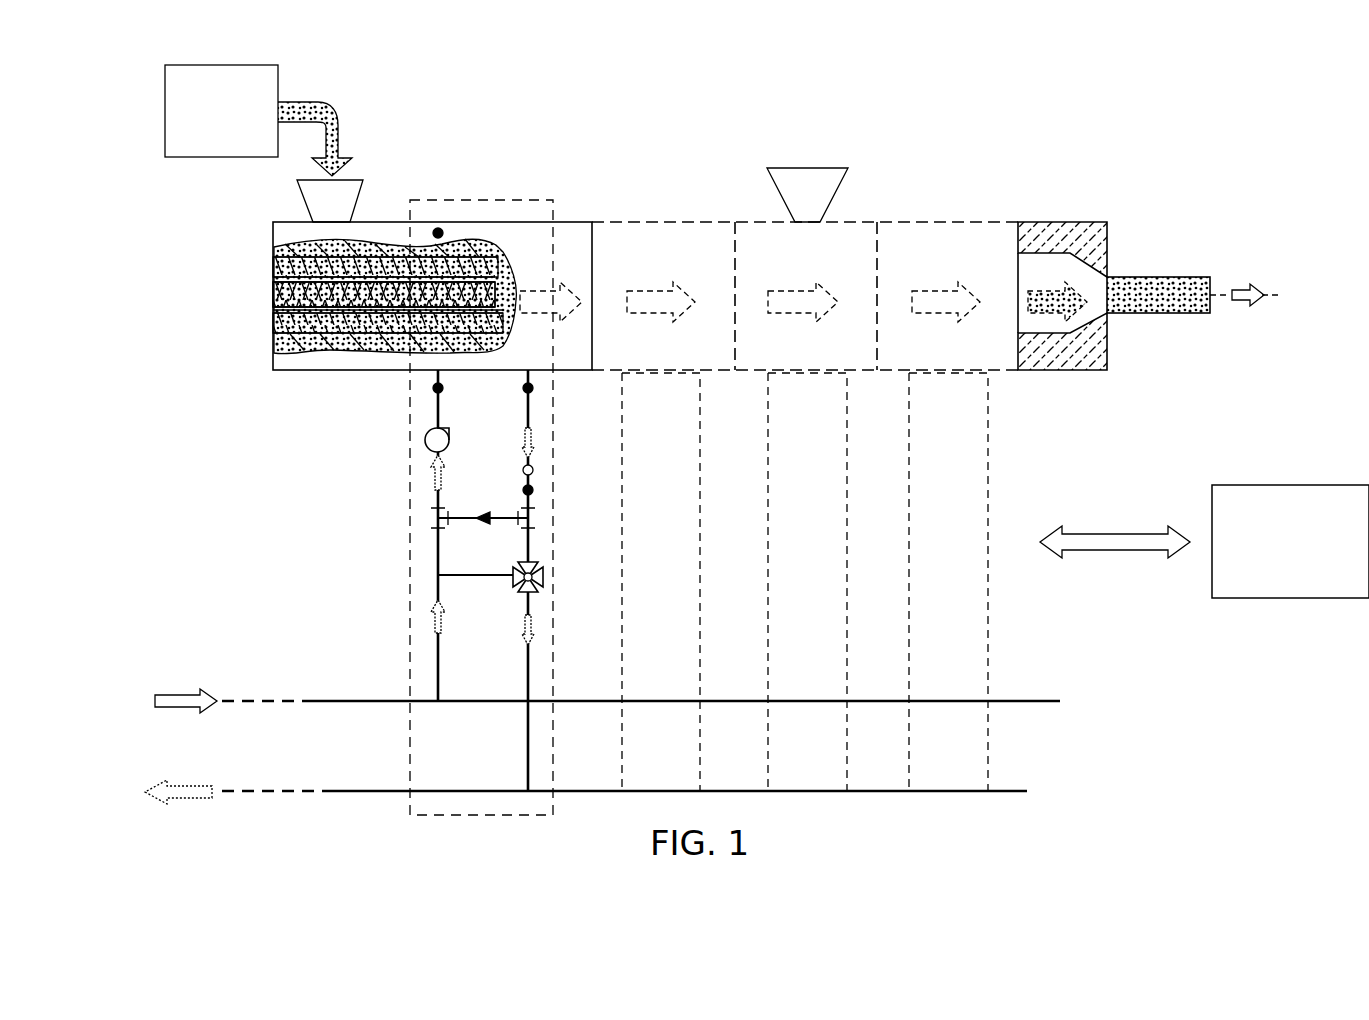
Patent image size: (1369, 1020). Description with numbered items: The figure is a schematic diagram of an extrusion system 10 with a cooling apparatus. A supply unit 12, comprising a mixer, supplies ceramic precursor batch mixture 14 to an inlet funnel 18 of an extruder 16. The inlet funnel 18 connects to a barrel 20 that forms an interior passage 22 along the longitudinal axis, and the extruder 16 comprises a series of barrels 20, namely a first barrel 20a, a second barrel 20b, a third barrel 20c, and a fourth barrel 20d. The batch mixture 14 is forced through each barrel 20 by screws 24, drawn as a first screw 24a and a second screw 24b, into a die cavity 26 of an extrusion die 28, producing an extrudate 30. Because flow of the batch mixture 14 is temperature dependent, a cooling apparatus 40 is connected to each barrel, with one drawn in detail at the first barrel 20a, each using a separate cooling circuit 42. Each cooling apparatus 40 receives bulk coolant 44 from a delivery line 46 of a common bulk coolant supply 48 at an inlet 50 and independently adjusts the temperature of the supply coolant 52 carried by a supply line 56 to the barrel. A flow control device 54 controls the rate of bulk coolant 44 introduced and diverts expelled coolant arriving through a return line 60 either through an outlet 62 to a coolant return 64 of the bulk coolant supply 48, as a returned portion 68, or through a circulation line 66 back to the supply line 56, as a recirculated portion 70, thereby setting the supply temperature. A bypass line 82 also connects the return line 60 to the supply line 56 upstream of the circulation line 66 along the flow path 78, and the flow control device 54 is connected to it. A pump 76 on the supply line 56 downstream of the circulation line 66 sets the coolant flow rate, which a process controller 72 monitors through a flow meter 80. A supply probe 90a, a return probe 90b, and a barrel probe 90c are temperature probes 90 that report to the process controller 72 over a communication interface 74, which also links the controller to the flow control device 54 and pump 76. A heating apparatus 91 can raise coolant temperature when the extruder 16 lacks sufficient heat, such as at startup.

The extrusion system 10 is at (1133, 120).
The supply unit 12 is at (221, 111).
The ceramic precursor batch mixture 14 is at (340, 134).
The extruder 16 is at (670, 266).
The inlet funnel 18 is at (318, 200).
The barrel 20 is at (645, 266).
The first barrel 20a is at (570, 222).
The second barrel 20b is at (665, 318).
The third barrel 20c is at (806, 318).
The fourth barrel 20d is at (948, 318).
The interior passage 22 is at (498, 250).
The screws 24 is at (320, 290).
The first screw 24a is at (278, 265).
The second screw 24b is at (290, 316).
The die cavity 26 is at (1085, 280).
The extrusion die 28 is at (1100, 275).
The extrudate 30 is at (1155, 300).
The cooling apparatus 40 is at (410, 510).
The cooling circuit 42 is at (487, 470).
The bulk coolant 44 is at (437, 625).
The delivery line 46 is at (437, 680).
The bulk coolant supply 48 is at (347, 791).
The inlet 50 is at (438, 575).
The supply coolant 52 is at (435, 478).
The flow control device 54 is at (542, 580).
The supply line 56 is at (438, 410).
The return line 60 is at (530, 412).
The outlet 62 is at (532, 538).
The coolant return 64 is at (530, 742).
The circulation line 66 is at (463, 520).
The returned portion 68 is at (532, 635).
The recirculated portion 70 is at (487, 522).
The process controller 72 is at (1290, 541).
The communication interface 74 is at (1108, 545).
The pump 76 is at (425, 440).
The flow path 78 is at (530, 440).
The flow meter 80 is at (534, 490).
The bypass line 82 is at (482, 576).
The temperature probes 90 is at (481, 267).
The supply probe 90a is at (433, 388).
The return probe 90b is at (533, 388).
The barrel probe 90c is at (438, 228).
The heating apparatus 91 is at (534, 470).